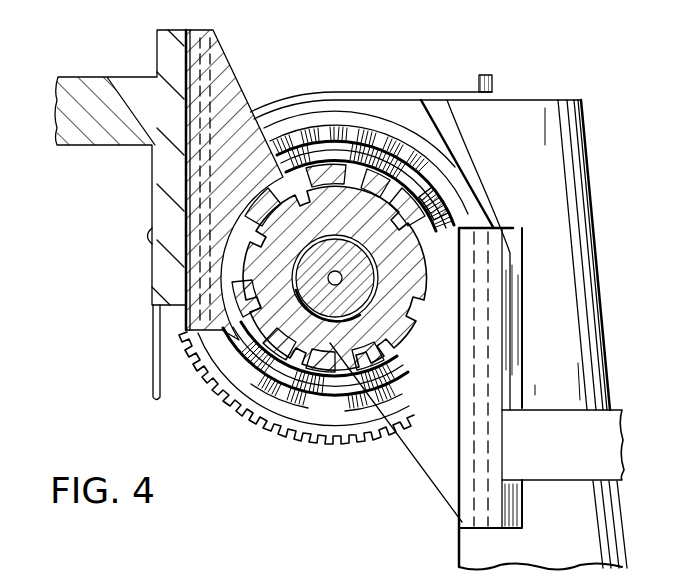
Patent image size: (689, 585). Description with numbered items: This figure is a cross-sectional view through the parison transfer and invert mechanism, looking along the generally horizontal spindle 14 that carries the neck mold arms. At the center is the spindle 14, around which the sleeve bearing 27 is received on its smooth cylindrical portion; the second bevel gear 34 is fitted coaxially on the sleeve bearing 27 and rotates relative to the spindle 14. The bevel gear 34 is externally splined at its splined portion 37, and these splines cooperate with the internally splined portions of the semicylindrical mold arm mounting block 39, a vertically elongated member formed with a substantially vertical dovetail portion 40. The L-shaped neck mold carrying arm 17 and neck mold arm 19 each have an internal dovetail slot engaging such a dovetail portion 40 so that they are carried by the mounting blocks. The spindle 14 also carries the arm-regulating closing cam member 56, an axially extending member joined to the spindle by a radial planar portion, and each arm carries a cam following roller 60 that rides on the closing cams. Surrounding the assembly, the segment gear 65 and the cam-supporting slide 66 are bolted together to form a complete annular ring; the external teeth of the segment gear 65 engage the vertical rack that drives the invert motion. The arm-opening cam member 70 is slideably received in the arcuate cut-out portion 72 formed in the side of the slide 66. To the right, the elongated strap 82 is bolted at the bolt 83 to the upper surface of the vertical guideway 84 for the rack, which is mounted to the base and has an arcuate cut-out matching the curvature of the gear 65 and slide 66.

The spindle 14 is at (330, 300).
The neck mold carrying arm 17 is at (603, 448).
The neck mold arm 19 is at (77, 117).
The sleeve bearing 27 is at (405, 305).
The second bevel gear 34 is at (428, 240).
The splined portion 37 is at (388, 364).
The mold arm mounting block 39 is at (447, 216).
The dovetail portion 40 is at (483, 240).
The cam member 56 is at (337, 160).
The cam following roller 60 is at (440, 200).
The segment gear 65 is at (350, 423).
The cam-supporting slide 66 is at (393, 148).
The arm-opening cam member 70 is at (303, 132).
The arcuate cut-out portion 72 is at (428, 175).
The elongated strap 82 is at (360, 93).
The bolt 83 is at (500, 68).
The vertical guideway 84 is at (563, 197).